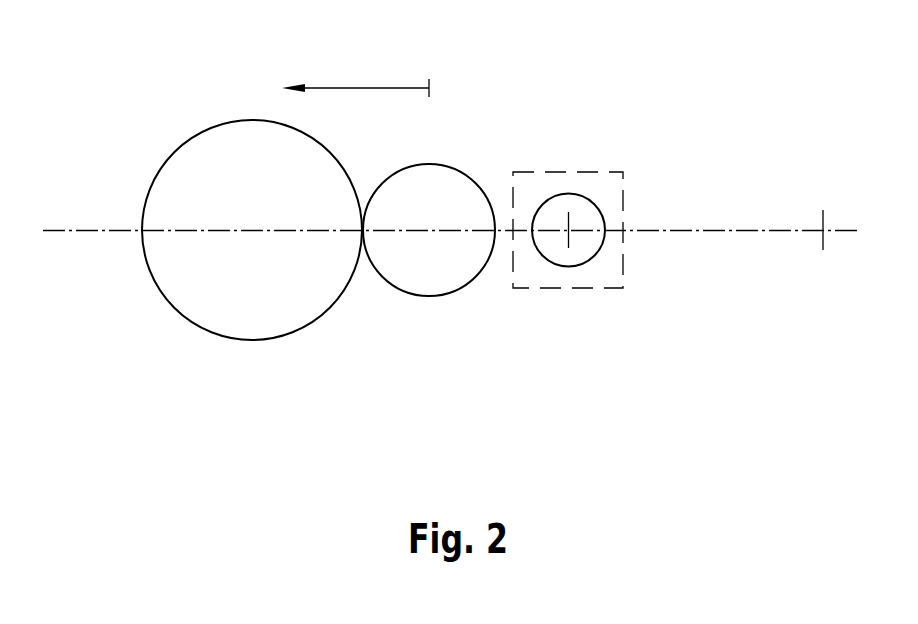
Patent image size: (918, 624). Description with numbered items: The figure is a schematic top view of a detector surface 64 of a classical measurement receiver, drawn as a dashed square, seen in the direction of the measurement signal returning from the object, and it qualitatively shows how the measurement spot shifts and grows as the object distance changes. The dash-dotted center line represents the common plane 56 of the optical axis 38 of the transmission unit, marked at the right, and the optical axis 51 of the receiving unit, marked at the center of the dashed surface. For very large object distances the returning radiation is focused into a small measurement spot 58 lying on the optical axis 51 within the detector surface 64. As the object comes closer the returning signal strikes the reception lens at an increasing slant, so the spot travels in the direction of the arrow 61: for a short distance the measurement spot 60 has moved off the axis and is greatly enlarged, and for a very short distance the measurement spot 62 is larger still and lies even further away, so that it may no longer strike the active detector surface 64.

The optical axis of the transmission unit 38 is at (825, 214).
The optical axis of the receiving unit 51 is at (576, 222).
The common plane of the optical axes 56 is at (89, 238).
The measurement spot for very large object distances 58 is at (560, 205).
The measurement spot for a short object distance 60 is at (445, 178).
The arrow 61 is at (335, 80).
The measurement spot for a very short object distance 62 is at (217, 143).
The detector surface 64 is at (608, 275).